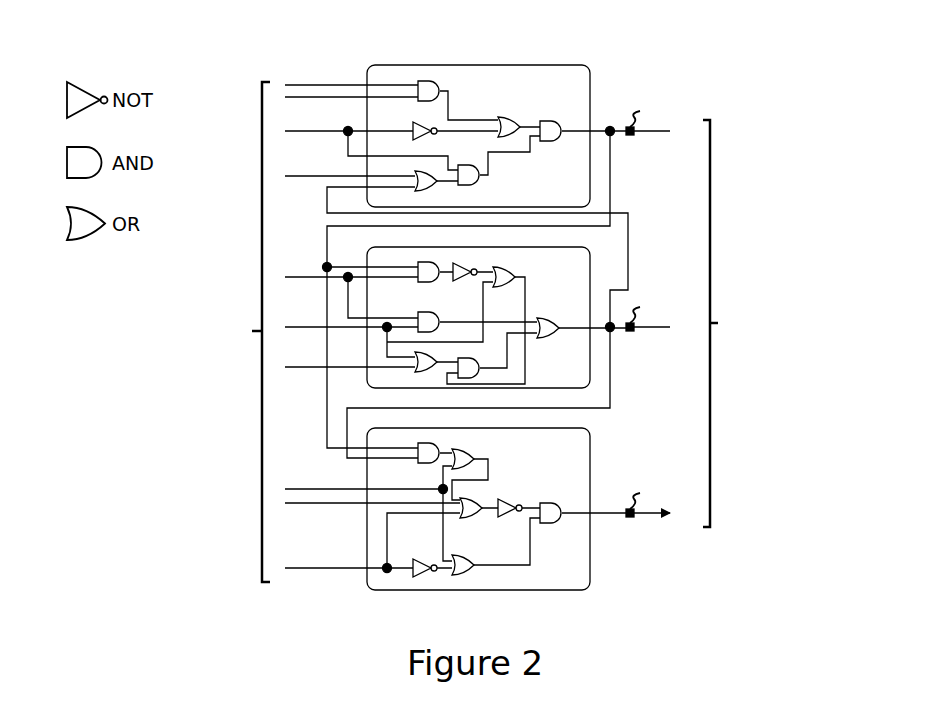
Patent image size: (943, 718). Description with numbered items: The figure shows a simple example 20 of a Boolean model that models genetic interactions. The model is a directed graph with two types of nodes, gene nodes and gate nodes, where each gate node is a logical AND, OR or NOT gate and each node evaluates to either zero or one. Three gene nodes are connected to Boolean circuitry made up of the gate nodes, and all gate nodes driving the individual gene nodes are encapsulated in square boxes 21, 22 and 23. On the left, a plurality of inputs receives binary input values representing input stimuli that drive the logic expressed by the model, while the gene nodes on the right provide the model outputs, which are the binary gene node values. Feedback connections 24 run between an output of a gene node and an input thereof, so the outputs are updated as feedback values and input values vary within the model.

The Boolean model example 20 is at (754, 58).
The square box 21 is at (590, 66).
The square box 22 is at (590, 248).
The square box 23 is at (590, 429).
The feedback connections 24 is at (635, 226).